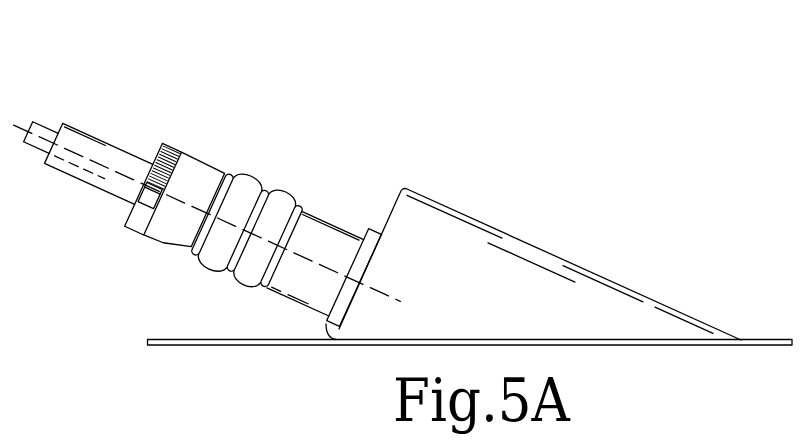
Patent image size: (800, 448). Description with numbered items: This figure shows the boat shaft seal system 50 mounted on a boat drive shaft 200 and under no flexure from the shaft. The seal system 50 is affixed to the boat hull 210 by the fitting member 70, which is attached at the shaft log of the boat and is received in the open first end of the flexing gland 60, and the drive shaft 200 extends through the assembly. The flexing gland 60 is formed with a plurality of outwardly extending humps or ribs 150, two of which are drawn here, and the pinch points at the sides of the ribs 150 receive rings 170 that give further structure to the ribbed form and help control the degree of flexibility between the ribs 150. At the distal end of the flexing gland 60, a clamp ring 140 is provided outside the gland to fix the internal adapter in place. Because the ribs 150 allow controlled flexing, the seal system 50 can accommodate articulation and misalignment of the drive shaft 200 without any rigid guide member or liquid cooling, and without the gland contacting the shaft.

The boat shaft seal system 50 is at (207, 160).
The flexing gland 60 is at (313, 240).
The fitting member 70 is at (377, 230).
The clamp ring 140 is at (147, 199).
The ribs 150 is at (248, 173).
The rings 170 is at (195, 251).
The boat drive shaft 200 is at (87, 137).
The boat hull 210 is at (623, 339).